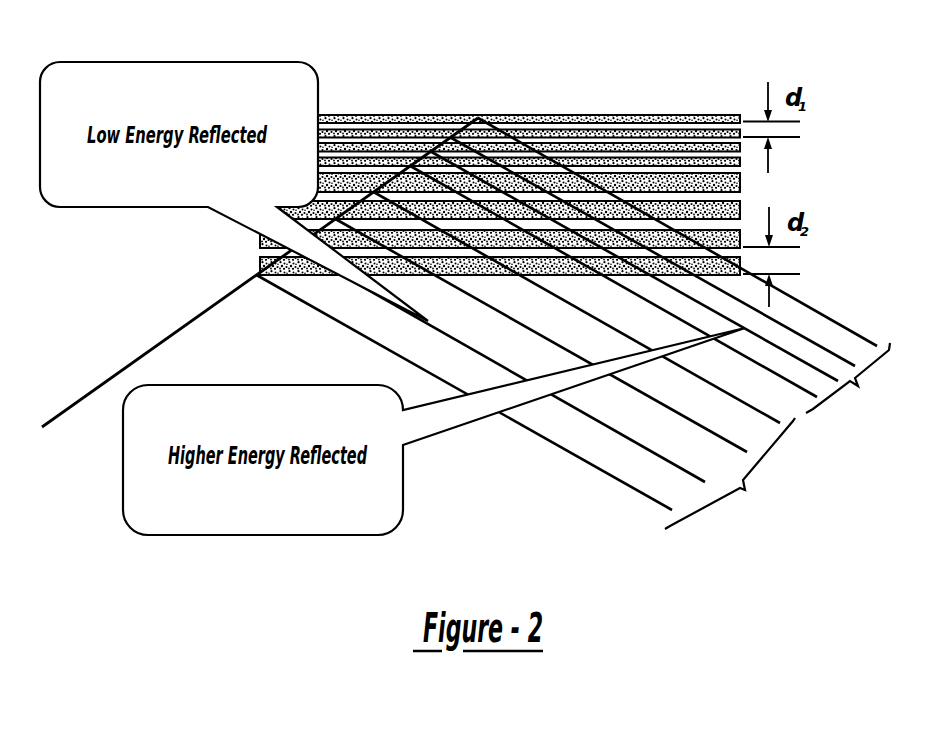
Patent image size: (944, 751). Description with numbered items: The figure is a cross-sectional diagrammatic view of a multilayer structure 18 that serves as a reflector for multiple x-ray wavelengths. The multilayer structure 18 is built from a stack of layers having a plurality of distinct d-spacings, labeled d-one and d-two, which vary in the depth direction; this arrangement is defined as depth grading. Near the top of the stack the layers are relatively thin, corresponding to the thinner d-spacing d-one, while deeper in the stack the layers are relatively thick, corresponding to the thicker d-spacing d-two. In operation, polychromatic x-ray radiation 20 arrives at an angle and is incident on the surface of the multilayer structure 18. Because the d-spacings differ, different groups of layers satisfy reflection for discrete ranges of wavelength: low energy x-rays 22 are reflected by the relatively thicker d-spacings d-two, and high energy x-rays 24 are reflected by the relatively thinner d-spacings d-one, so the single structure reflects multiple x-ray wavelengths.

The multilayer structure 18 is at (687, 114).
The polychromatic x-ray radiation 20 is at (86, 392).
The low energy x-rays 22 is at (750, 490).
The high energy x-rays 24 is at (866, 391).